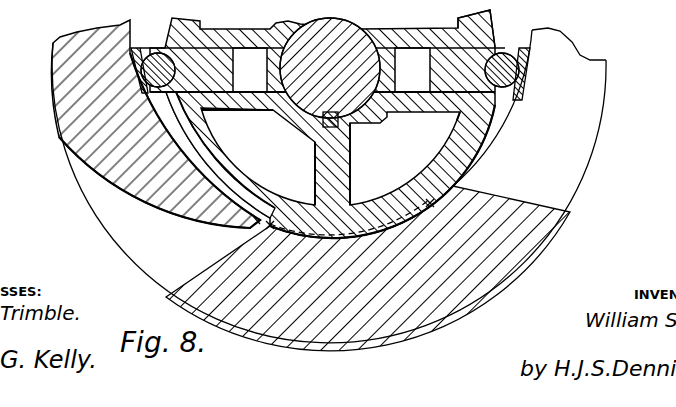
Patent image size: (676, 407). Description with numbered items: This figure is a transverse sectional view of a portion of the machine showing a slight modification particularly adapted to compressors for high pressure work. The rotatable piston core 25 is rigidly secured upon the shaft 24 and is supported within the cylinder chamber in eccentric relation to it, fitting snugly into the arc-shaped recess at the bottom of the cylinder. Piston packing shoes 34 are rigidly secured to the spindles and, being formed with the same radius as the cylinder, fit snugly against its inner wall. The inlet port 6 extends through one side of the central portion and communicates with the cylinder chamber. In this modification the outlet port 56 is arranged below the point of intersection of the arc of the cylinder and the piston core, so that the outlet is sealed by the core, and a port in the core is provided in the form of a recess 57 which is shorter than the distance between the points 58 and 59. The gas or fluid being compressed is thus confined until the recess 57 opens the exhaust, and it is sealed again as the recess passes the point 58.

The inlet port 6 is at (577, 160).
The shaft 24 is at (352, 103).
The rotatable piston core 25 is at (482, 30).
The piston packing shoes 34 is at (134, 62).
The outlet port 56 is at (253, 223).
The recess 57 is at (197, 158).
The point 58 is at (270, 226).
The point 59 is at (430, 203).